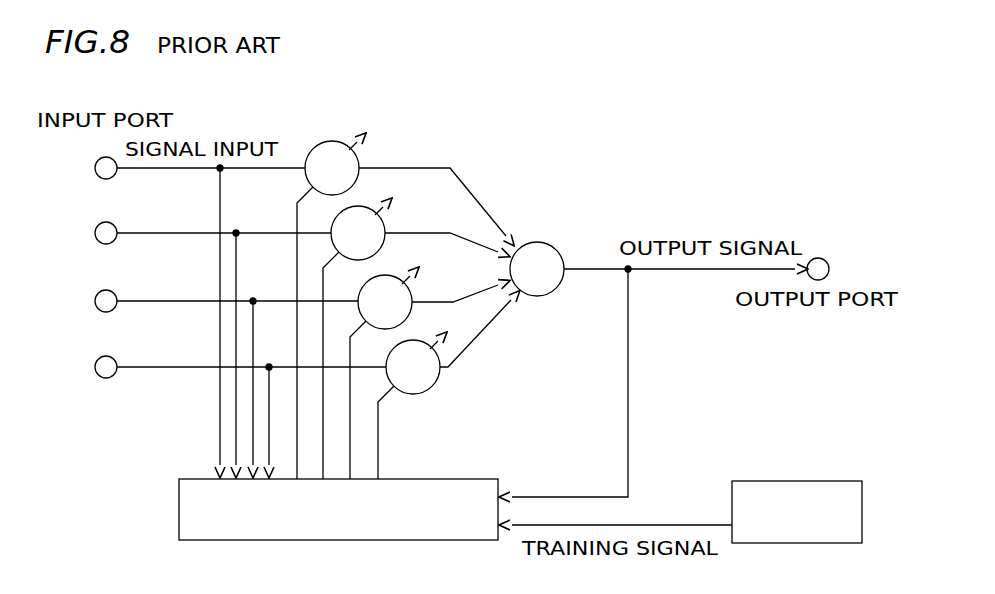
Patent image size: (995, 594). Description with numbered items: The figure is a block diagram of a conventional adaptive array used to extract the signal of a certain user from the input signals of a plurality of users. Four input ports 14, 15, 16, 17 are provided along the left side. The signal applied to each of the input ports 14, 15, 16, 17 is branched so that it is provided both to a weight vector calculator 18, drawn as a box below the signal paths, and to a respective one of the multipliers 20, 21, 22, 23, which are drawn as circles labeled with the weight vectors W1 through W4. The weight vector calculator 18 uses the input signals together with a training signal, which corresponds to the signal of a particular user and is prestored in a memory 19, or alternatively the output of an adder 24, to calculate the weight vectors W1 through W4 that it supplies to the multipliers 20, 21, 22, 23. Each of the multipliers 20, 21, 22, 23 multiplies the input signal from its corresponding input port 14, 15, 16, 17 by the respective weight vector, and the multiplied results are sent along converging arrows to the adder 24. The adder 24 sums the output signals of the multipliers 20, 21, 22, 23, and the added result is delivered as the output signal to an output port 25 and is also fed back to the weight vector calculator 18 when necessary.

The input port 14 is at (94, 168).
The input port 15 is at (94, 233).
The input port 16 is at (94, 301).
The input port 17 is at (94, 367).
The weight vector calculator 18 is at (322, 542).
The memory 19 is at (864, 513).
The multiplier 20 is at (330, 143).
The multiplier 21 is at (357, 208).
The multiplier 22 is at (383, 276).
The multiplier 23 is at (411, 343).
The adder 24 is at (540, 242).
The output port 25 is at (825, 259).